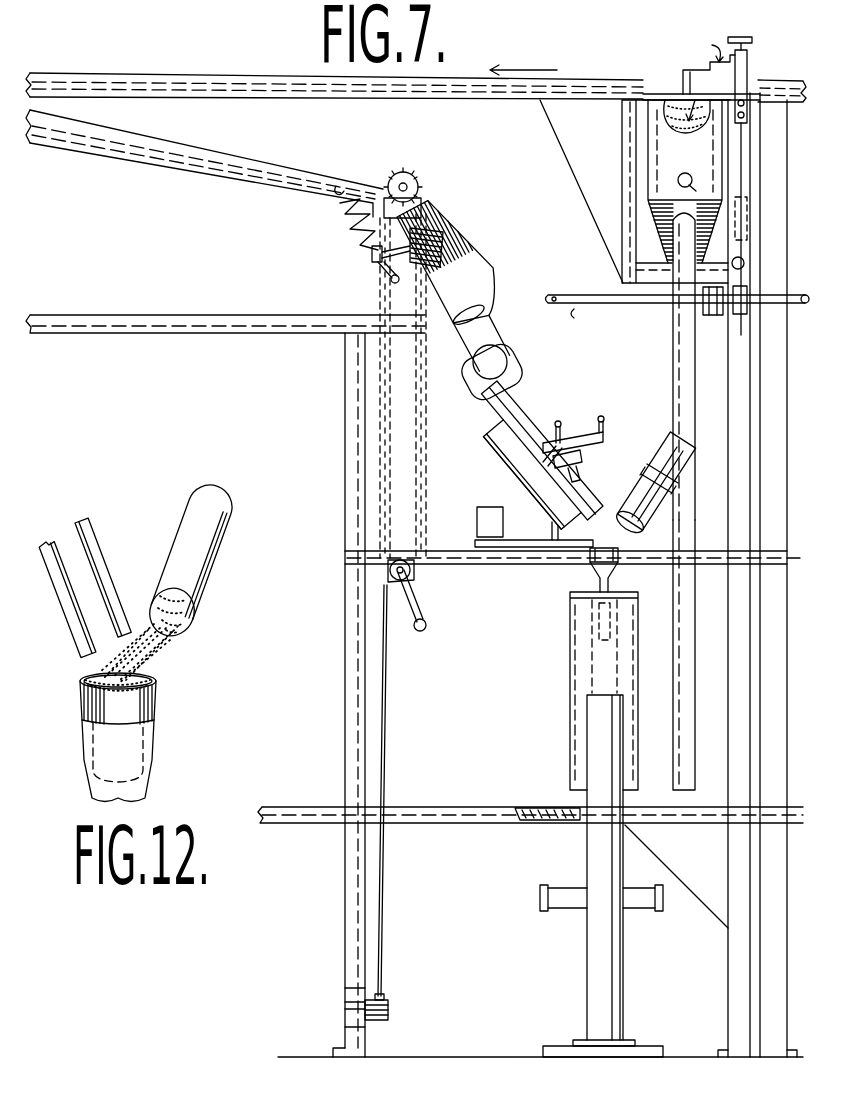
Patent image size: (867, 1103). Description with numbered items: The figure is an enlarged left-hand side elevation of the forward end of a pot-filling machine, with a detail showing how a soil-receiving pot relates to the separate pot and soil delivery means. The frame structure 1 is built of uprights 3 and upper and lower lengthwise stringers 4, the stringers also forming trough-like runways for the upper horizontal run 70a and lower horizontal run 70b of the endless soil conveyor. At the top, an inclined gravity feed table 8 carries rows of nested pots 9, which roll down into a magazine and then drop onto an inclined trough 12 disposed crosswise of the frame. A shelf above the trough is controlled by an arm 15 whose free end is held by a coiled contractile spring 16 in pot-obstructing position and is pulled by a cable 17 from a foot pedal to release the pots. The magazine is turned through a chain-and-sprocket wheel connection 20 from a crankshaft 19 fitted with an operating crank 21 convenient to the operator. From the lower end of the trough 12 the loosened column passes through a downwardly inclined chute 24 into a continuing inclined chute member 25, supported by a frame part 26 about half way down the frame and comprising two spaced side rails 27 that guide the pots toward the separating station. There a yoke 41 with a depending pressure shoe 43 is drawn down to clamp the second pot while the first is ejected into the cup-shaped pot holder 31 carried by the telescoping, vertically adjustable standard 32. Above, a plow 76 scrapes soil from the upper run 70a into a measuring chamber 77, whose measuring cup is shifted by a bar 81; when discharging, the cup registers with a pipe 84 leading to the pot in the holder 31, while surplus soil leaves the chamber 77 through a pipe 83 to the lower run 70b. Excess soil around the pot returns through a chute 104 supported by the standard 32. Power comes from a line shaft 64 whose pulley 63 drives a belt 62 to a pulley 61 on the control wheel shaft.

In FIG. 7, the frame structure 1 is at (325, 360).
In FIG. 7, the uprights 3 is at (345, 440).
In FIG. 7, the stringers 4 is at (426, 100).
In FIG. 7, the inclined gravity feed table 8 is at (230, 163).
In FIG. 12, the nested pots 9 is at (159, 698).
In FIG. 7, the inclined trough 12 is at (490, 292).
In FIG. 7, the arm 15 is at (458, 236).
In FIG. 7, the coiled contractile spring 16 is at (352, 236).
In FIG. 7, the cable 17 is at (387, 686).
In FIG. 7, the crankshaft 19 is at (412, 573).
In FIG. 7, the chain-and-sprocket wheel connection 20 is at (424, 392).
In FIG. 7, the operating crank 21 is at (427, 609).
In FIG. 7, the downwardly inclined chute 24 is at (500, 356).
In FIG. 7, the inclined chute member 25 is at (476, 441).
In FIG. 12, the inclined chute member 25 is at (70, 520).
In FIG. 7, the frame part 26 is at (500, 462).
In FIG. 7, the side rails 27 is at (524, 420).
In FIG. 12, the side rails 27 is at (102, 561).
In FIG. 7, the pot holder 31 is at (583, 577).
In FIG. 12, the pot holder 31 is at (152, 749).
In FIG. 7, the vertically adjustable standard 32 is at (587, 848).
In FIG. 7, the yoke 41 is at (601, 465).
In FIG. 7, the pressure shoe 43 is at (572, 452).
In FIG. 7, the pulley 61 is at (748, 205).
In FIG. 7, the belt 62 is at (748, 250).
In FIG. 7, the pulley 63 is at (738, 315).
In FIG. 7, the line shaft 64 is at (592, 295).
In FIG. 7, the upper horizontal run 70a is at (650, 96).
In FIG. 7, the lower horizontal run 70b is at (548, 808).
In FIG. 7, the plow 76 is at (694, 74).
In FIG. 7, the measuring chamber 77 is at (694, 165).
In FIG. 7, the bar 81 is at (697, 187).
In FIG. 7, the pipe 83 is at (686, 650).
In FIG. 7, the pipe 84 is at (675, 390).
In FIG. 12, the pipe 84 is at (208, 565).
In FIG. 7, the chute 104 is at (577, 670).